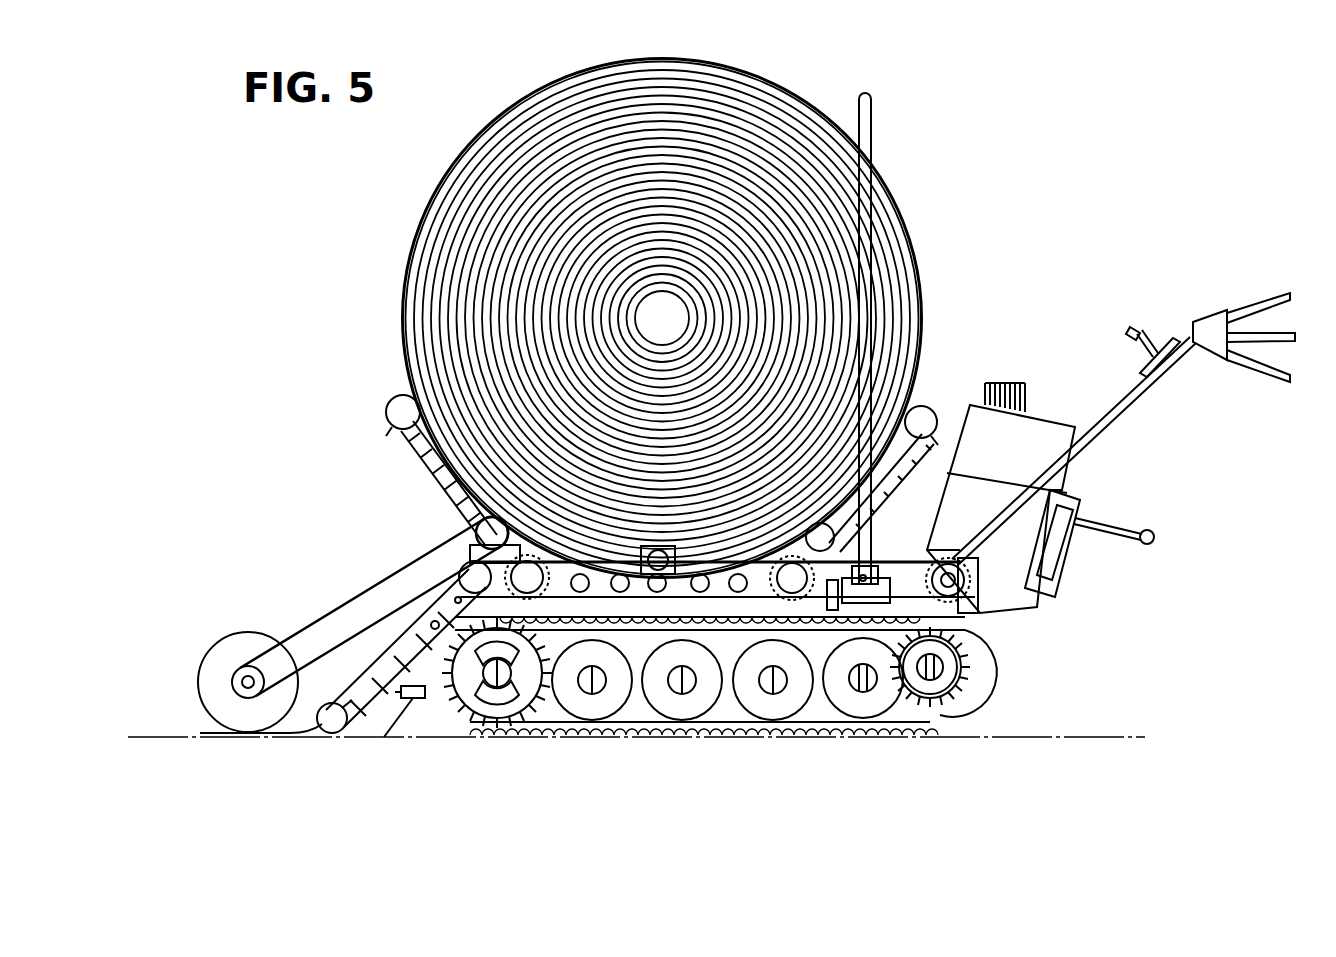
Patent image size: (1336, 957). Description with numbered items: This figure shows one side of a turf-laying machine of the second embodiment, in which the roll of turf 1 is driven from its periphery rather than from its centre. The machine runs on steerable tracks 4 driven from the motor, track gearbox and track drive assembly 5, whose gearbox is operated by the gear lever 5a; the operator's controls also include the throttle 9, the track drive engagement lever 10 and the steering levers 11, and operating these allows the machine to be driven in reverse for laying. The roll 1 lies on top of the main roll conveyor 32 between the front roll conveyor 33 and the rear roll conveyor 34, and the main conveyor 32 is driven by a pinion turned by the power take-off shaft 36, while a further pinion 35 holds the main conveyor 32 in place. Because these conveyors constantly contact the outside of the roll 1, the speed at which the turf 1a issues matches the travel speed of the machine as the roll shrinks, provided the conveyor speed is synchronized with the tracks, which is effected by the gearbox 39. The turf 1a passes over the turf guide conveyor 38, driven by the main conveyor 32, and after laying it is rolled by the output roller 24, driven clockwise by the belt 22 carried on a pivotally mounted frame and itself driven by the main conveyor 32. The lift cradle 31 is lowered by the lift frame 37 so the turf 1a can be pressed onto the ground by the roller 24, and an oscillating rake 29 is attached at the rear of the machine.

The roll of turf 1 is at (697, 88).
The turf 1a is at (205, 738).
The steerable tracks 4 is at (719, 710).
The motor, track gearbox and track drive assembly 5 is at (1010, 605).
The gear lever 5a is at (1152, 530).
The throttle 9 is at (1138, 326).
The track drive engagement lever 10 is at (1267, 293).
The steering levers 11 is at (1268, 380).
The belt 22 is at (378, 572).
The output roller 24 is at (240, 633).
The oscillating rake 29 is at (418, 702).
The lift cradle 31 is at (870, 92).
The main roll conveyor 32 is at (725, 565).
The front roll conveyor 33 is at (930, 403).
The rear roll conveyor 34 is at (395, 396).
The pinion 35 is at (660, 575).
The power take-off shaft 36 is at (1003, 480).
The lift frame 37 is at (448, 516).
The turf guide conveyor 38 is at (338, 733).
The gearbox 39 is at (573, 722).